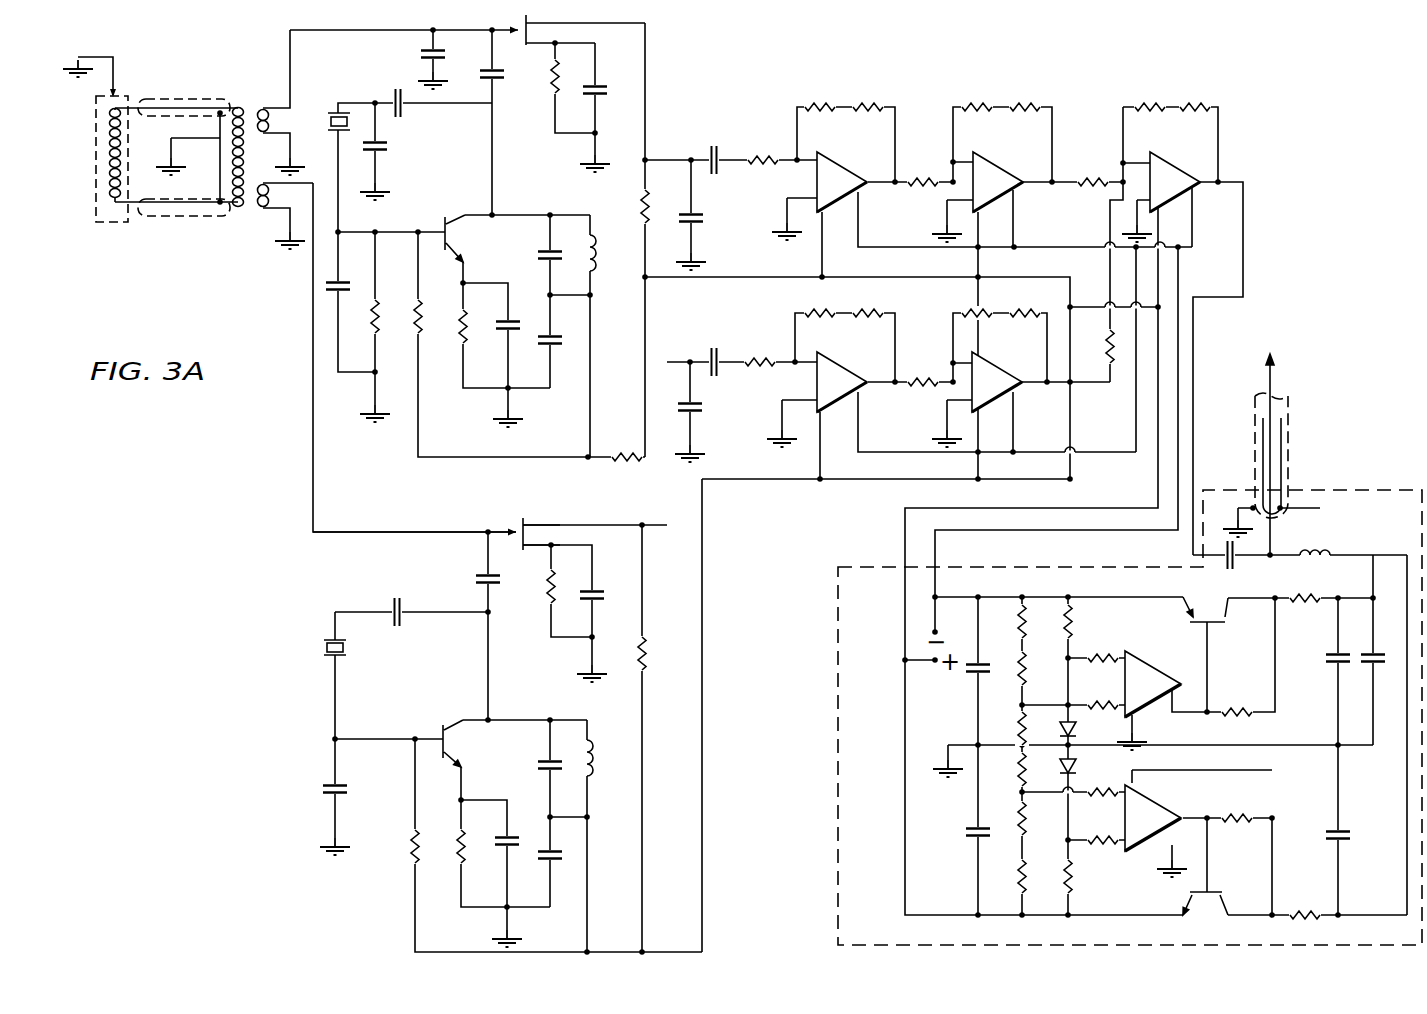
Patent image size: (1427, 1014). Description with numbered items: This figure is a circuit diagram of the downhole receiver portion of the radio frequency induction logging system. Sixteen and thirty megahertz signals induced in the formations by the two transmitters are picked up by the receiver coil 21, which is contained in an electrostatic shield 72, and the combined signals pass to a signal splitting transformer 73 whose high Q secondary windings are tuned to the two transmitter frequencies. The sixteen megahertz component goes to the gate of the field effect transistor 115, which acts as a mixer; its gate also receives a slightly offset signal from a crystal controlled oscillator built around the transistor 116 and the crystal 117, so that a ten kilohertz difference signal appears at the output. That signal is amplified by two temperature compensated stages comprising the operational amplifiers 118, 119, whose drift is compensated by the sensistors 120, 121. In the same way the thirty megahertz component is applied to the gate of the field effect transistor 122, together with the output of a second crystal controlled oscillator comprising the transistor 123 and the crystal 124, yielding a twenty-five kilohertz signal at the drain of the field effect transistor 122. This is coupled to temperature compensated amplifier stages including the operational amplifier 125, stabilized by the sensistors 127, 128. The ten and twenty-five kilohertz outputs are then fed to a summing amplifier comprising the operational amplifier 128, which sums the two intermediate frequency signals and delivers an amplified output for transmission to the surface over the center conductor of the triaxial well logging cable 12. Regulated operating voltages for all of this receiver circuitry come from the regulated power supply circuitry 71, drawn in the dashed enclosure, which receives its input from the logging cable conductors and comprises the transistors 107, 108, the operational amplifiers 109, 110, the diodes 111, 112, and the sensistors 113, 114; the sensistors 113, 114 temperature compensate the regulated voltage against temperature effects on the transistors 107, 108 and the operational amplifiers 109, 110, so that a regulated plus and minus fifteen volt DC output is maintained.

The triaxial well logging cable 12 is at (1290, 438).
The receiver coil 21 is at (108, 139).
The regulated power supply circuitry 71 is at (838, 667).
The electrostatic shield 72 is at (106, 223).
The signal splitting transformer 73 is at (249, 110).
The transistor 107 is at (1228, 612).
The transistor 108 is at (1226, 905).
The operational amplifier 109 is at (1148, 668).
The operational amplifier 110 is at (1161, 803).
The diode 111 is at (1078, 731).
The diode 112 is at (1078, 768).
The sensistor 113 is at (1021, 609).
The sensistor 114 is at (1020, 870).
The field effect transistor 115 is at (527, 46).
The transistor 116 is at (466, 234).
The crystal 117 is at (331, 114).
The operational amplifier 118 is at (849, 169).
The operational amplifier 119 is at (1003, 171).
The sensistor 120 is at (873, 103).
The sensistor 121 is at (1019, 106).
The field effect transistor 122 is at (524, 519).
The transistor 123 is at (461, 720).
The crystal 124 is at (348, 644).
The operational amplifier 125 is at (862, 392).
The sensistor 127 is at (1021, 318).
The sensistor / operational amplifier 128 is at (1175, 169).